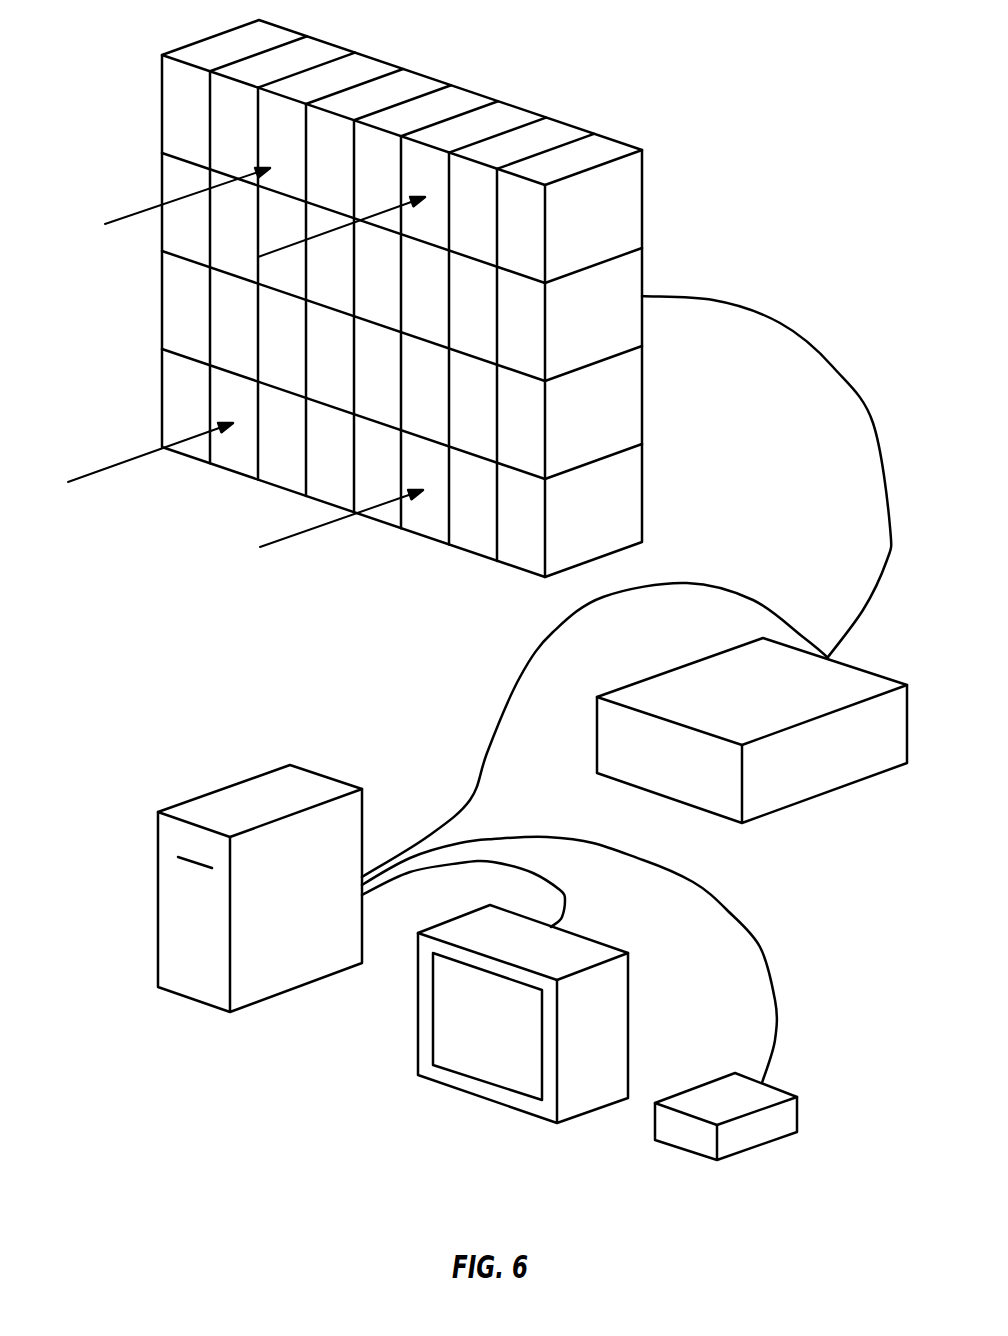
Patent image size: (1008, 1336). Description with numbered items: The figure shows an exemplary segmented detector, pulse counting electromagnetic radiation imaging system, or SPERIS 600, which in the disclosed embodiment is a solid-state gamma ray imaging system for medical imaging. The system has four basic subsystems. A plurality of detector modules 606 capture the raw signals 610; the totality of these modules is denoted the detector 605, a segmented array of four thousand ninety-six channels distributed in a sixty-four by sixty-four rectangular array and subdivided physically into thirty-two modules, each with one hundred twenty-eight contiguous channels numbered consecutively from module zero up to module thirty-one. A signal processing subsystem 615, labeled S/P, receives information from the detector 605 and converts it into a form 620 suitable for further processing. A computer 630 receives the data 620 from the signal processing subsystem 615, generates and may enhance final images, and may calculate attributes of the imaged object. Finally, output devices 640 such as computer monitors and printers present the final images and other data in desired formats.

The segmented detector, pulse counting electromagnetic radiation imaging system (SPE 600 is at (440, 60).
The detector 605 is at (257, 25).
The detector module 606 is at (175, 181).
The raw signals 610 is at (163, 78).
The signal processing subsystem 615 is at (725, 650).
The data 620 is at (505, 712).
The computer 630 is at (186, 810).
The output device 640 is at (432, 1080).